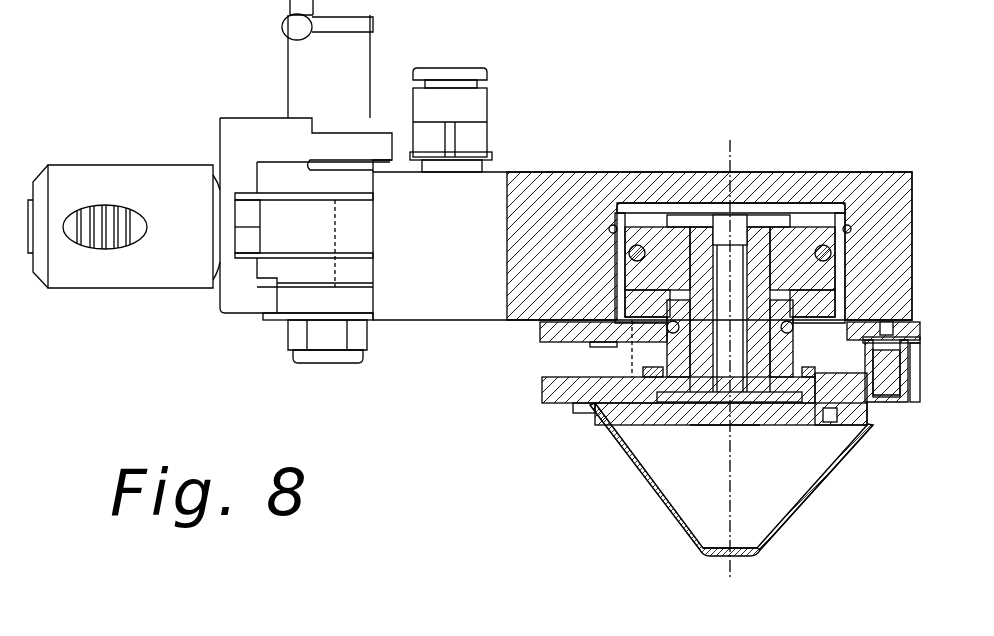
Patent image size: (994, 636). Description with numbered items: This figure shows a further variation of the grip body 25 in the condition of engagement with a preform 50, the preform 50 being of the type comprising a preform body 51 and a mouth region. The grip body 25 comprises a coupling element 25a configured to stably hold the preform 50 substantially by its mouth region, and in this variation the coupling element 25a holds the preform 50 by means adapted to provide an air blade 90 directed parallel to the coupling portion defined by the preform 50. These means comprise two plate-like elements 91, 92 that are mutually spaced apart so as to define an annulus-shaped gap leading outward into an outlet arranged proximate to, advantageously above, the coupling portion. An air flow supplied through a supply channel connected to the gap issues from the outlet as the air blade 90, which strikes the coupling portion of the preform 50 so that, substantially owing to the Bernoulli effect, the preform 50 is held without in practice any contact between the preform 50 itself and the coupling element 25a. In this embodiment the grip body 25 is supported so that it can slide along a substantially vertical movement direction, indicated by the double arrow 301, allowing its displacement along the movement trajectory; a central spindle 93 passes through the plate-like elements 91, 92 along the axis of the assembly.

The grip body 25 is at (604, 121).
The spindle 93 is at (737, 250).
The plate-like element 91 is at (540, 380).
The plate-like element 92 is at (627, 420).
The air blade 90 is at (576, 412).
The preform 50 is at (643, 490).
The coupling element 25a is at (705, 427).
The preform body 51 is at (796, 515).
The axial displacement direction 301 is at (935, 356).